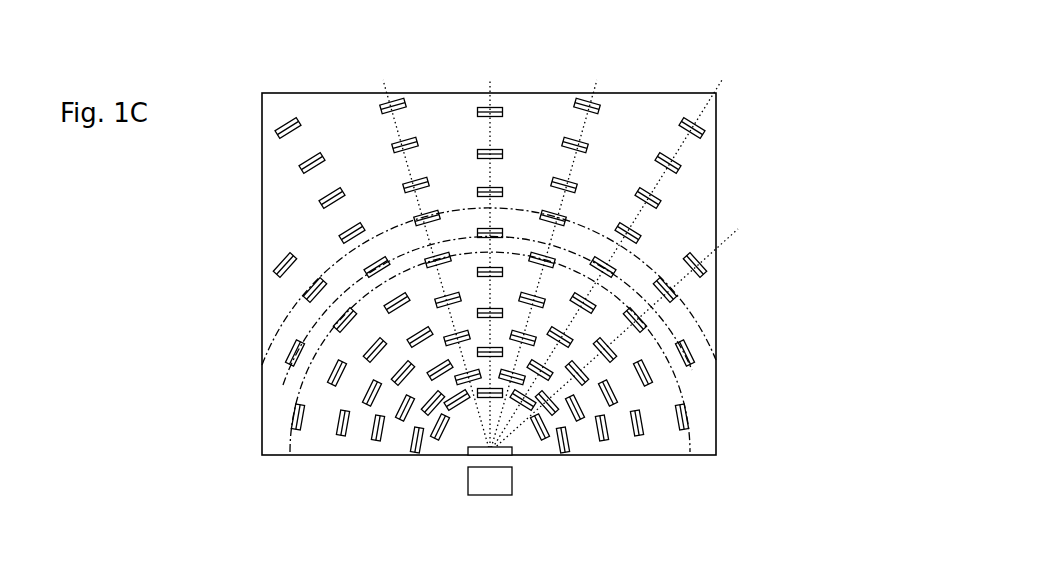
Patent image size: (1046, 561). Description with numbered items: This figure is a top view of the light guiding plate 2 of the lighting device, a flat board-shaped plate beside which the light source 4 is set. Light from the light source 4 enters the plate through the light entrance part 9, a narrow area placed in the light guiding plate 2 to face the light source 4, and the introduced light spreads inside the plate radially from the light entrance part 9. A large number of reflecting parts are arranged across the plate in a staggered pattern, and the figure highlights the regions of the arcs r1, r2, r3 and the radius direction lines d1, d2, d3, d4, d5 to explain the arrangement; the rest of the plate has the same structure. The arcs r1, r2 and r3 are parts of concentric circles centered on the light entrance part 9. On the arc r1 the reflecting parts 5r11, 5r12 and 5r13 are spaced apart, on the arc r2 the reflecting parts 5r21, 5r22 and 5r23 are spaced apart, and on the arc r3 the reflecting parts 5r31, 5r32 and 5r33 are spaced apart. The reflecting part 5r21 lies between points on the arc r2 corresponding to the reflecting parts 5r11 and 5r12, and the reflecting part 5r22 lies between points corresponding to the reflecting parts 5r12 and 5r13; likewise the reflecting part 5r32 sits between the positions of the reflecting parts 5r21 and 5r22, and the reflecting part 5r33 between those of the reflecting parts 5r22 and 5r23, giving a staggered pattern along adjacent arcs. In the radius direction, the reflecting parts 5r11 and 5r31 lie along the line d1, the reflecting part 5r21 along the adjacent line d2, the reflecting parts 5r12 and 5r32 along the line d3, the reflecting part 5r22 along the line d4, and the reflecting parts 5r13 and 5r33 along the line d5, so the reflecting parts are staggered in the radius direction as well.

The light guiding plate 2 is at (717, 425).
The light source 4 is at (512, 488).
The light entrance part 9 is at (512, 449).
The radius direction line d1 is at (629, 334).
The radius direction line d2 is at (625, 254).
The radius direction line d3 is at (551, 252).
The radius direction line d4 is at (485, 252).
The radius direction line d5 is at (425, 252).
The arc r1 is at (680, 397).
The arc r2 is at (700, 366).
The arc r3 is at (717, 345).
The reflecting part 5r11 is at (643, 325).
The reflecting part 5r12 is at (550, 262).
The reflecting part 5r13 is at (408, 265).
The reflecting part 5r21 is at (613, 272).
The reflecting part 5r22 is at (503, 230).
The reflecting part 5r23 is at (367, 272).
The reflecting part 5r31 is at (672, 292).
The reflecting part 5r32 is at (557, 220).
The reflecting part 5r33 is at (413, 222).